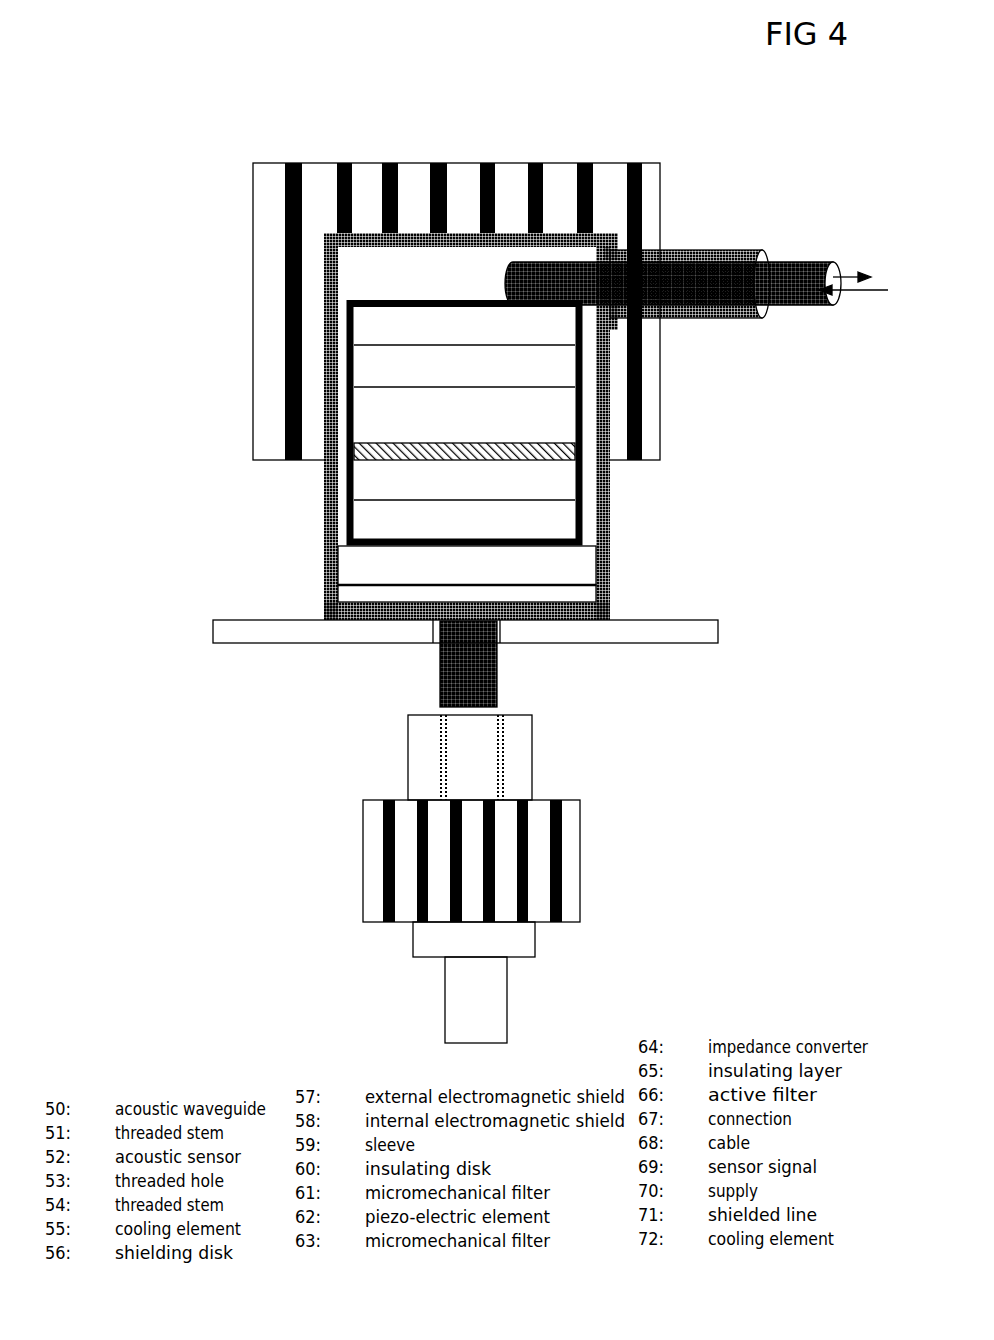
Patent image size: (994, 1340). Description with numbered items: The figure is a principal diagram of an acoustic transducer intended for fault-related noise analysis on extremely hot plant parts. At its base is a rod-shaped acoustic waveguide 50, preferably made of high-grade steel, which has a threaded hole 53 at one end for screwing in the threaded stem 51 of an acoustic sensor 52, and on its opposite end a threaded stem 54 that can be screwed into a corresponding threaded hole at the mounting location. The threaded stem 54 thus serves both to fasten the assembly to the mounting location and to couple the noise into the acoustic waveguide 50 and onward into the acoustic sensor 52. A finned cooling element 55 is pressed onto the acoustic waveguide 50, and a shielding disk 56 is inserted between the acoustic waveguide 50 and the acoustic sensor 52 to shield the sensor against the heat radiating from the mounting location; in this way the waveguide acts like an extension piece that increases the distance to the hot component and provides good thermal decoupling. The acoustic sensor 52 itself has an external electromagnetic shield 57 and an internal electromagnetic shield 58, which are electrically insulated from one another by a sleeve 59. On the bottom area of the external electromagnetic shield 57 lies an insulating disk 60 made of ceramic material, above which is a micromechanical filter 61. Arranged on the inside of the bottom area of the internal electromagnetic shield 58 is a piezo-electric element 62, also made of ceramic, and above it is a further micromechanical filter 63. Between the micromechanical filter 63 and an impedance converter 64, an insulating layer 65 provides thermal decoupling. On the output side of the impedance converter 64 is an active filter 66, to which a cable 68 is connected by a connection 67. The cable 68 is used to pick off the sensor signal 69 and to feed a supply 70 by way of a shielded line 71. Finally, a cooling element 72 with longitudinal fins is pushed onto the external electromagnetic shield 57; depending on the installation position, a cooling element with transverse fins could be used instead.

The acoustic waveguide 50 is at (578, 879).
The threaded stem 51 is at (497, 672).
The acoustic sensor 52 is at (553, 391).
The threaded hole 53 is at (488, 758).
The threaded stem 54 is at (488, 1003).
The cooling element 55 is at (572, 883).
The shielding disk 56 is at (647, 633).
The external electromagnetic shield 57 is at (610, 575).
The internal electromagnetic shield 58 is at (348, 533).
The sleeve 59 is at (590, 508).
The insulating disk 60 is at (325, 593).
The micromechanical filter 61 is at (467, 565).
The piezo-electric element 62 is at (464, 519).
The micromechanical filter 63 is at (464, 485).
The impedance converter 64 is at (464, 415).
The insulating layer 65 is at (358, 453).
The active filter 66 is at (464, 373).
The connection 67 is at (464, 331).
The cable 68 is at (697, 312).
The sensor signal 69 is at (848, 275).
The supply 70 is at (863, 292).
The shielded line 71 is at (838, 307).
The cooling element 72 is at (653, 407).